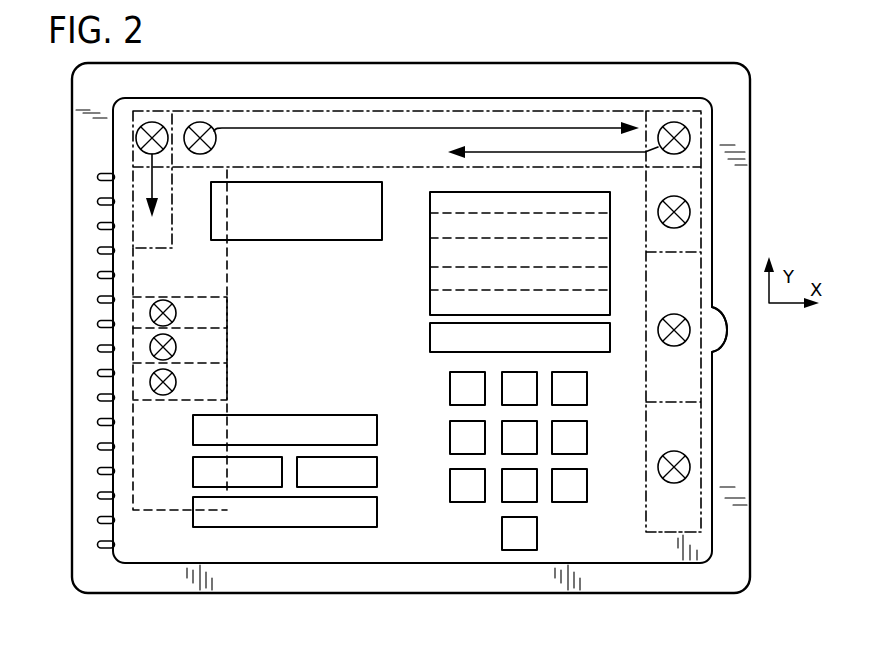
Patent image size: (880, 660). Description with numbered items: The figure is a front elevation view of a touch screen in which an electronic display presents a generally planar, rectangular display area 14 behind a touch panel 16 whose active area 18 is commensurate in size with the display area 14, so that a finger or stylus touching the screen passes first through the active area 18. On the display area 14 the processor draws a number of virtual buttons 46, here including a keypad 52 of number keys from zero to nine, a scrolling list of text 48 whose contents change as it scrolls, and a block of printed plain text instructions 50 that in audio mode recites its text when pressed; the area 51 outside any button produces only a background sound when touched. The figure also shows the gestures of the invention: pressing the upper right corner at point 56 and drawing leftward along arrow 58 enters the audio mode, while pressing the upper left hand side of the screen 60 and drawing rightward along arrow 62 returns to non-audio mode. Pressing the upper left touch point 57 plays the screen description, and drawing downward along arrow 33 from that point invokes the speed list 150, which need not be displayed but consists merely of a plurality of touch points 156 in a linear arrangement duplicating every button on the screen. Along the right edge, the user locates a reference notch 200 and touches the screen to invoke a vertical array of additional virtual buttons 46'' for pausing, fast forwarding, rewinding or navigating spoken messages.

The display area 14 is at (407, 525).
The touch panel 16 is at (306, 601).
The active area 18 is at (392, 537).
The arrow 33 is at (150, 183).
The virtual buttons 46 is at (321, 373).
The additional virtual buttons 46'' is at (732, 334).
The scrolling list of text 48 is at (505, 263).
The printed plain text instructions 50 is at (283, 220).
The area outside of any virtual button 51 is at (269, 347).
The keypad 52 is at (604, 385).
The point 56 is at (690, 133).
The touch point 57 is at (133, 122).
The arrow 58 is at (538, 152).
The upper left hand side of the screen 60 is at (197, 122).
The arrow 62 is at (612, 128).
The speed list 150 is at (138, 267).
The touch points 156 is at (150, 382).
The reference notch 200 is at (727, 328).